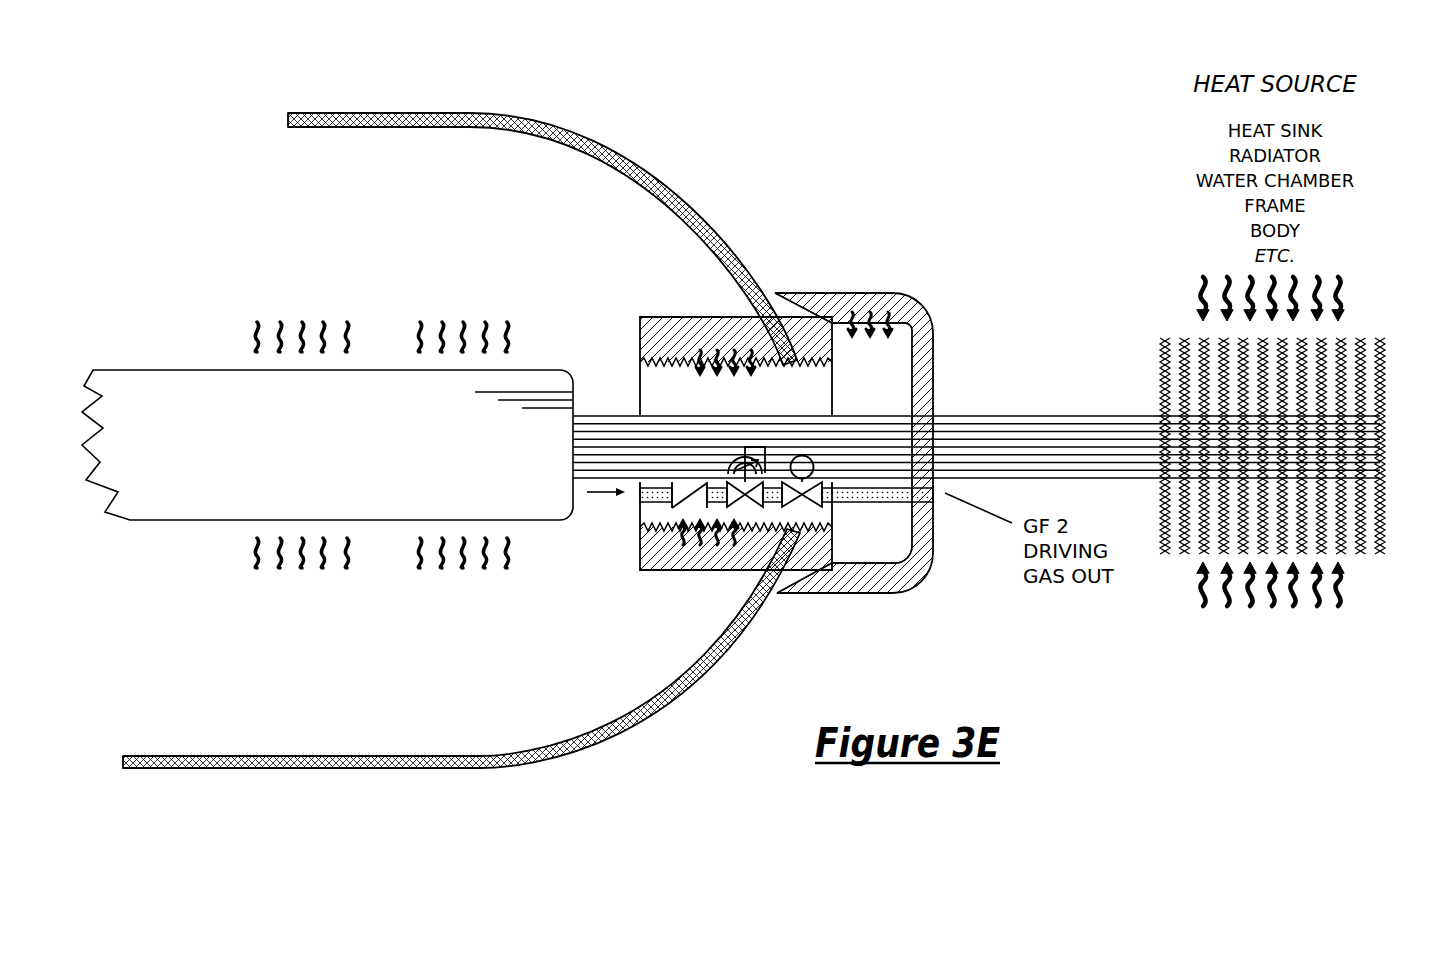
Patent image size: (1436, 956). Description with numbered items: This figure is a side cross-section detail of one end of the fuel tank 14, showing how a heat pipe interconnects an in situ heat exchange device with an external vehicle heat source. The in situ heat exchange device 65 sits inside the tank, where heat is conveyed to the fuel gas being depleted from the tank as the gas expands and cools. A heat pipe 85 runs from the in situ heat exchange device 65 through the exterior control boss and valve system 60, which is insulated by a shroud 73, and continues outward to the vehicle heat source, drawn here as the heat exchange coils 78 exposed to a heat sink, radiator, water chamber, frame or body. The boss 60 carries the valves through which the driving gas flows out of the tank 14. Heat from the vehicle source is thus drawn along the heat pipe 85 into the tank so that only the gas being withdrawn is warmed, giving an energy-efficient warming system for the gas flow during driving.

The tank 14 is at (493, 113).
The in situ heat exchange device 65 is at (185, 370).
The heat pipe 85 is at (620, 435).
The control boss and valve system 60 is at (895, 535).
The shroud insulation 73 is at (890, 585).
The heat sink coil 78 is at (1380, 547).